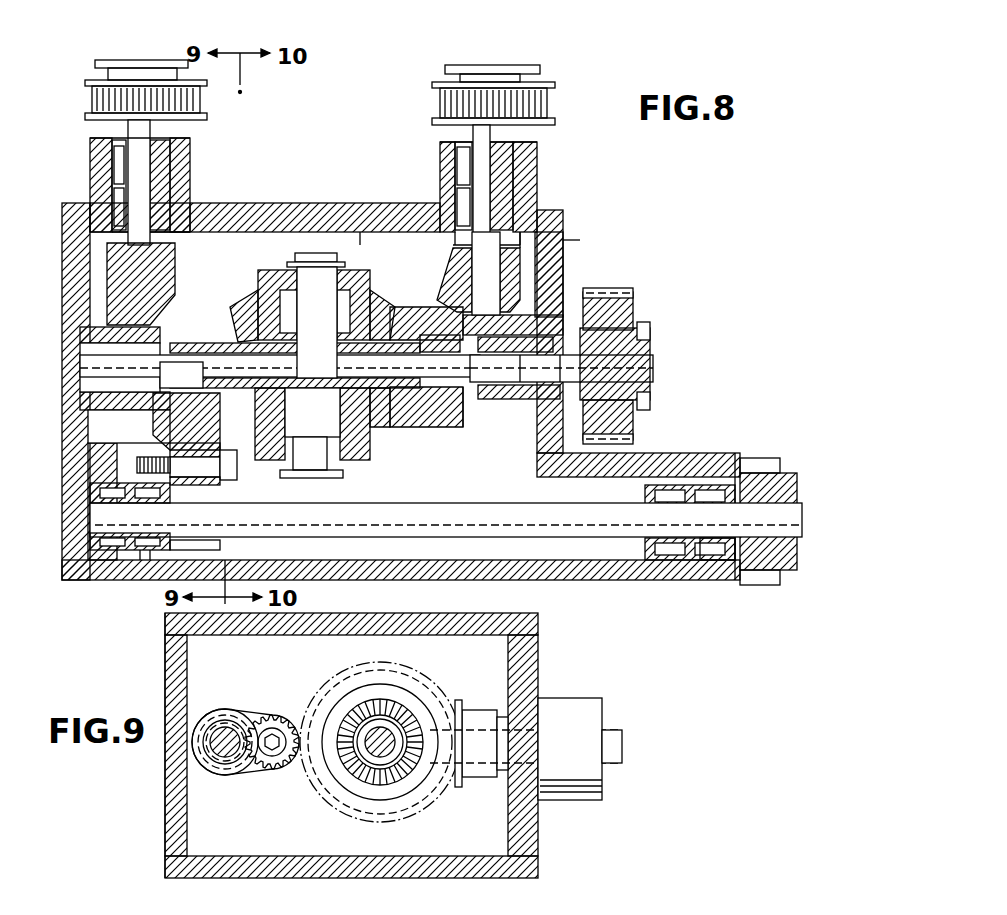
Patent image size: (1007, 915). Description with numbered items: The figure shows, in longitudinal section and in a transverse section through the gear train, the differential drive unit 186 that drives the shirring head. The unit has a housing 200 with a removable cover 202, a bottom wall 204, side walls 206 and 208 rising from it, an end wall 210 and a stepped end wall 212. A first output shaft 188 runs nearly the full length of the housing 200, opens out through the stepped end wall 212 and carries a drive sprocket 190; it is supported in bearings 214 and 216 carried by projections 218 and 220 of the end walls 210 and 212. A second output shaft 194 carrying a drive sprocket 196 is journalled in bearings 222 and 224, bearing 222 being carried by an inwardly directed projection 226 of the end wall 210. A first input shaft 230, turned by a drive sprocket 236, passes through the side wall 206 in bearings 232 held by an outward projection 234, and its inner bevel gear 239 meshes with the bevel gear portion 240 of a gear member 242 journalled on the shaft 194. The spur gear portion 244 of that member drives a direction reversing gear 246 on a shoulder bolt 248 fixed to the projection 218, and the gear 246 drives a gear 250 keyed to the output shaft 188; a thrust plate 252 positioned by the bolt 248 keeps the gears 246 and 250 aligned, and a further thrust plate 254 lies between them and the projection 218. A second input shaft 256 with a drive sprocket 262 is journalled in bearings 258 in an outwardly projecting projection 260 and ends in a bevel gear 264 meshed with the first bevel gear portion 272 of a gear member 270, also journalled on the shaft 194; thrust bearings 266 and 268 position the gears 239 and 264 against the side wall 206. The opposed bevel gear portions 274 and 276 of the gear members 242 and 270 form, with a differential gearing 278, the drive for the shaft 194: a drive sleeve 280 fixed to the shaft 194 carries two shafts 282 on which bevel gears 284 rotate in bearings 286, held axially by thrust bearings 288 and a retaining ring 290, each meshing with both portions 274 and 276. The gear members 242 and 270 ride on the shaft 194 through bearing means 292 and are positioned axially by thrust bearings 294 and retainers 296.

In FIG. 8, the differential drive unit 186 is at (600, 250).
In FIG. 8, the first output shaft 188 is at (522, 515).
In FIG. 9, the first output shaft 188 is at (213, 765).
In FIG. 8, the drive sprocket 190 is at (780, 458).
In FIG. 8, the second output shaft 194 is at (653, 360).
In FIG. 9, the second output shaft 194 is at (412, 720).
In FIG. 8, the drive sprocket 196 is at (637, 303).
In FIG. 8, the housing 200 is at (573, 243).
In FIG. 9, the removable cover 202 is at (538, 618).
In FIG. 9, the bottom wall 204 is at (357, 867).
In FIG. 8, the side wall 206 is at (352, 203).
In FIG. 9, the side wall 206 is at (530, 822).
In FIG. 8, the side wall 208 is at (688, 580).
In FIG. 9, the side wall 208 is at (172, 828).
In FIG. 8, the end wall 210 is at (73, 460).
In FIG. 8, the stepped end wall 212 is at (670, 453).
In FIG. 8, the bearing 214 is at (160, 578).
In FIG. 8, the bearing 216 is at (647, 497).
In FIG. 8, the projection 218 is at (118, 470).
In FIG. 9, the projection 218 is at (222, 707).
In FIG. 8, the projection 220 is at (700, 560).
In FIG. 8, the bearing 222 is at (150, 322).
In FIG. 8, the bearing 224 is at (576, 372).
In FIG. 8, the inwardly directed projection 226 is at (110, 405).
In FIG. 8, the first input shaft 230 is at (128, 166).
In FIG. 9, the first input shaft 230 is at (620, 742).
In FIG. 8, the bearings 232 is at (172, 158).
In FIG. 8, the outward projection 234 is at (97, 147).
In FIG. 9, the outward projection 234 is at (573, 713).
In FIG. 8, the drive sprocket 236 is at (85, 85).
In FIG. 8, the bevel gear 239 is at (180, 265).
In FIG. 9, the bevel gear 239 is at (430, 767).
In FIG. 8, the bevel gear portion 240 is at (146, 516).
In FIG. 8, the gear member 242 is at (228, 307).
In FIG. 8, the spur gear portion 244 is at (243, 243).
In FIG. 9, the spur gear portion 244 is at (350, 657).
In FIG. 8, the direction reversing gear 246 is at (237, 484).
In FIG. 9, the direction reversing gear 246 is at (273, 713).
In FIG. 8, the shoulder bolt 248 is at (222, 462).
In FIG. 8, the gear 250 is at (207, 540).
In FIG. 9, the gear 250 is at (247, 777).
In FIG. 8, the thrust plate 252 is at (223, 540).
In FIG. 8, the thrust plate 254 is at (140, 565).
In FIG. 8, the second input shaft 256 is at (507, 137).
In FIG. 8, the bearings 258 is at (517, 163).
In FIG. 8, the outwardly projecting projection 260 is at (440, 157).
In FIG. 8, the drive sprocket 262 is at (552, 95).
In FIG. 8, the bevel gear 264 is at (573, 243).
In FIG. 8, the thrust bearing 266 is at (192, 206).
In FIG. 8, the thrust bearing 268 is at (530, 230).
In FIG. 8, the gear member 270 is at (432, 460).
In FIG. 8, the first bevel gear portion 272 is at (452, 290).
In FIG. 8, the bevel gear portion 274 is at (253, 382).
In FIG. 9, the bevel gear portion 274 is at (393, 725).
In FIG. 8, the bevel gear portion 276 is at (390, 305).
In FIG. 8, the differential gearing 278 is at (372, 247).
In FIG. 8, the drive sleeve 280 is at (327, 352).
In FIG. 8, the shafts 282 is at (318, 240).
In FIG. 8, the bevel gears 284 is at (375, 305).
In FIG. 8, the bearings 286 is at (290, 264).
In FIG. 8, the thrust bearings 288 is at (370, 247).
In FIG. 8, the retaining ring 290 is at (303, 250).
In FIG. 8, the bearing means 292 is at (218, 424).
In FIG. 8, the thrust bearings 294 is at (160, 375).
In FIG. 8, the retainers 296 is at (165, 362).